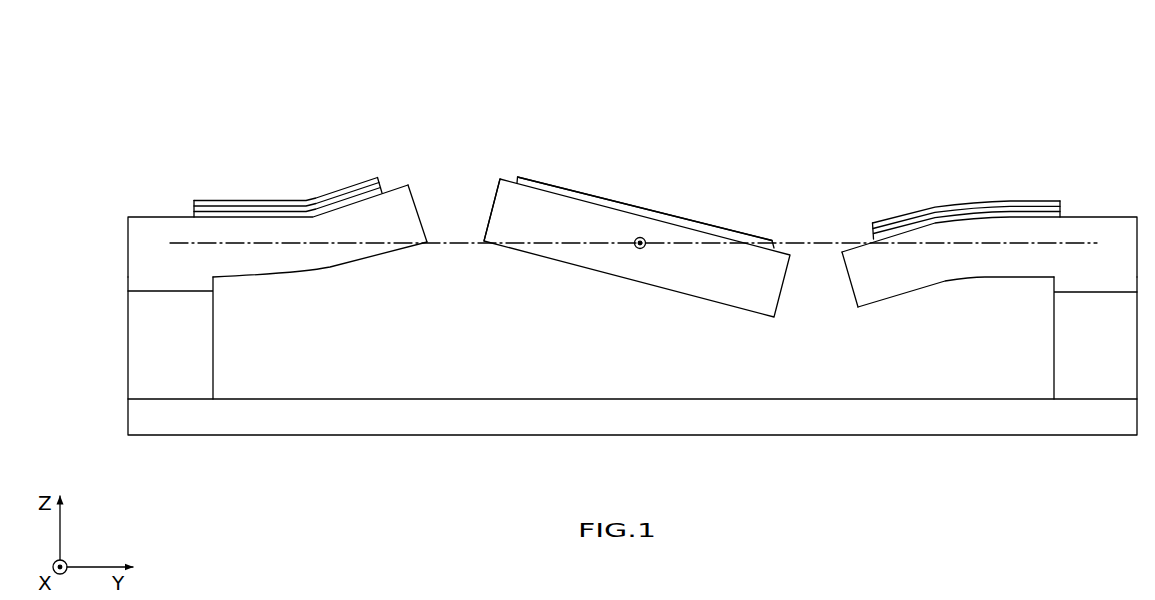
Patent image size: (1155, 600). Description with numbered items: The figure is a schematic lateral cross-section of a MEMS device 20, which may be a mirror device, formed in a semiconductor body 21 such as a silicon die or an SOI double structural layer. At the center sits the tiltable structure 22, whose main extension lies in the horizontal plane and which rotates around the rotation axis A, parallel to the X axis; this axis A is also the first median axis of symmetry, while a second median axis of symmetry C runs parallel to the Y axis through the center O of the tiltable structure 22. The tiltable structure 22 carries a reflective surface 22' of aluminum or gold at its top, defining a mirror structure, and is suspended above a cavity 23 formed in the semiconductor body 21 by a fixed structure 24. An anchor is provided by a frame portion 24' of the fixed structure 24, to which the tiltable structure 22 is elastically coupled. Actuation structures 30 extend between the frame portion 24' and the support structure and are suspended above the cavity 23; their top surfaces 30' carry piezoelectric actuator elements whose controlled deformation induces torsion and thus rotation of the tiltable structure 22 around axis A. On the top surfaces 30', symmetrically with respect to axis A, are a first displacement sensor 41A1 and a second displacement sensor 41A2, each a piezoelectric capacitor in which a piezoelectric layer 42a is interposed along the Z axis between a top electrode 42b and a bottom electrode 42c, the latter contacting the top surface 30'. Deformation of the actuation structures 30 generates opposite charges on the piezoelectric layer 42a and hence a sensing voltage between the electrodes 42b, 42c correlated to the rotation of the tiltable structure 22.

The MEMS device 20 is at (147, 90).
The semiconductor body 21 is at (102, 217).
The tiltable structure 22 is at (637, 254).
The reflective surface 22' is at (645, 183).
The cavity 23 is at (440, 272).
The fixed structure 24 is at (256, 209).
The frame portion 24' is at (989, 214).
The actuation structure 30 is at (633, 287).
The top surface 30' is at (610, 200).
The first displacement sensor 41A1 is at (1017, 204).
The second displacement sensor 41A2 is at (235, 205).
The piezoelectric layer 42a is at (287, 205).
The top electrode 42b is at (322, 190).
The bottom electrode 42c is at (340, 202).
The rotation axis A is at (629, 233).
The center O is at (641, 238).
The second median axis of symmetry C is at (668, 242).